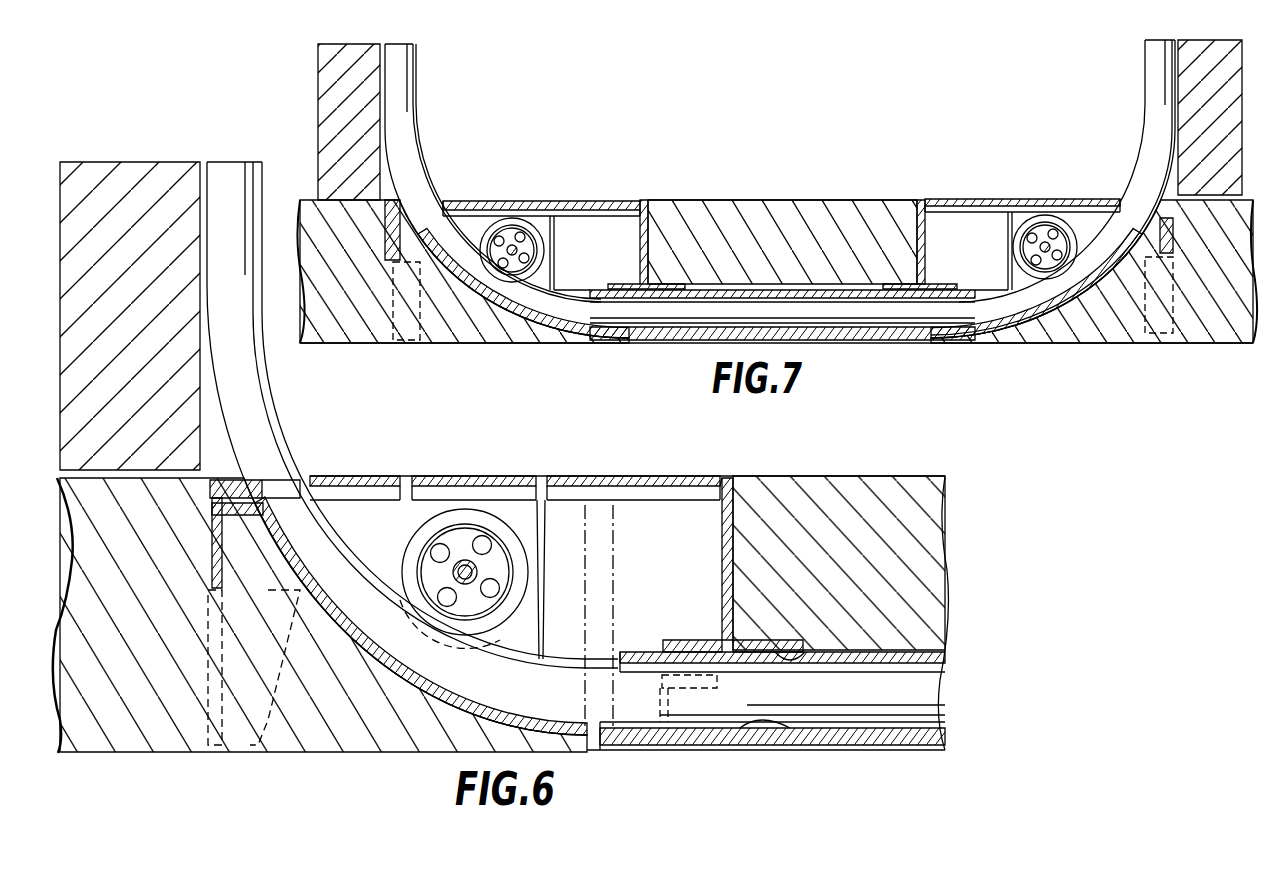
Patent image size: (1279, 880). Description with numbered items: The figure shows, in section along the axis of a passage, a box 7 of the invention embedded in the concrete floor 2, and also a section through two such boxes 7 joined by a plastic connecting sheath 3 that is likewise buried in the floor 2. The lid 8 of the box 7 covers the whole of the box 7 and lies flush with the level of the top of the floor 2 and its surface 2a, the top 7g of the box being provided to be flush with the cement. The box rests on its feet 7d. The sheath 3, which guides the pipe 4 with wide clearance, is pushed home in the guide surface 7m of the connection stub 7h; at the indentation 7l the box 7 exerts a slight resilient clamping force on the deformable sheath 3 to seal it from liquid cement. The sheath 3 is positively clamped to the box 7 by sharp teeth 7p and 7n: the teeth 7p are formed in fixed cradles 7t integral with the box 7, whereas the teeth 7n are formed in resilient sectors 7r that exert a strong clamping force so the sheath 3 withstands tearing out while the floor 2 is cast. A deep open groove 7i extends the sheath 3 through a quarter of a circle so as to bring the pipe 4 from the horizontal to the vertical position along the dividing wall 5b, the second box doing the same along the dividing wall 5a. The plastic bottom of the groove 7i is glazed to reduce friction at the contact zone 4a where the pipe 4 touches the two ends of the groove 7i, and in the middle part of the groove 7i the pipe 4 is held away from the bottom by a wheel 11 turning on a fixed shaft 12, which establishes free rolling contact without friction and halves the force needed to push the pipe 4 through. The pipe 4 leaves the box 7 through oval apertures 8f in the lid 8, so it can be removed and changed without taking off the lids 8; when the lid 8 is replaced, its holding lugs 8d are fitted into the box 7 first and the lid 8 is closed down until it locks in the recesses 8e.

In FIG. 6, the floor 2 is at (857, 483).
In FIG. 7, the floor 2 is at (773, 200).
In FIG. 6, the frame top surface 2a is at (822, 483).
In FIG. 7, the frame top surface 2a is at (730, 200).
In FIG. 6, the sheath 3 is at (935, 658).
In FIG. 7, the sheath 3 is at (790, 334).
In FIG. 6, the pipe 4 is at (279, 426).
In FIG. 7, the pipe 4 is at (1155, 118).
In FIG. 6, the contact zone 4a is at (262, 520).
In FIG. 7, the dividing wall 5a is at (1180, 88).
In FIG. 6, the dividing wall 5b is at (130, 172).
In FIG. 7, the dividing wall 5b is at (325, 130).
In FIG. 6, the box 7 is at (735, 535).
In FIG. 7, the box 7 is at (648, 245).
In FIG. 7, the feet 7d is at (405, 305).
In FIG. 6, the top of the box 7g is at (725, 478).
In FIG. 6, the connection stub 7h is at (792, 653).
In FIG. 6, the groove 7i is at (578, 657).
In FIG. 7, the groove 7i is at (580, 290).
In FIG. 6, the indentation 7l is at (762, 645).
In FIG. 6, the inner surface 7m is at (790, 650).
In FIG. 6, the teeth 7n is at (665, 655).
In FIG. 6, the teeth 7p is at (665, 735).
In FIG. 6, the resilient sectors 7r is at (700, 640).
In FIG. 6, the fixed cradles 7t is at (690, 756).
In FIG. 6, the lid 8 is at (660, 478).
In FIG. 7, the lid 8 is at (456, 200).
In FIG. 6, the holding lugs 8d is at (213, 477).
In FIG. 7, the holding lugs 8d is at (385, 215).
In FIG. 6, the recesses 8e is at (737, 482).
In FIG. 7, the recesses 8e is at (650, 200).
In FIG. 6, the oval apertures 8f is at (302, 462).
In FIG. 7, the oval apertures 8f is at (440, 200).
In FIG. 6, the wheel 11 is at (466, 522).
In FIG. 7, the wheel 11 is at (506, 218).
In FIG. 6, the fixed shaft 12 is at (457, 563).